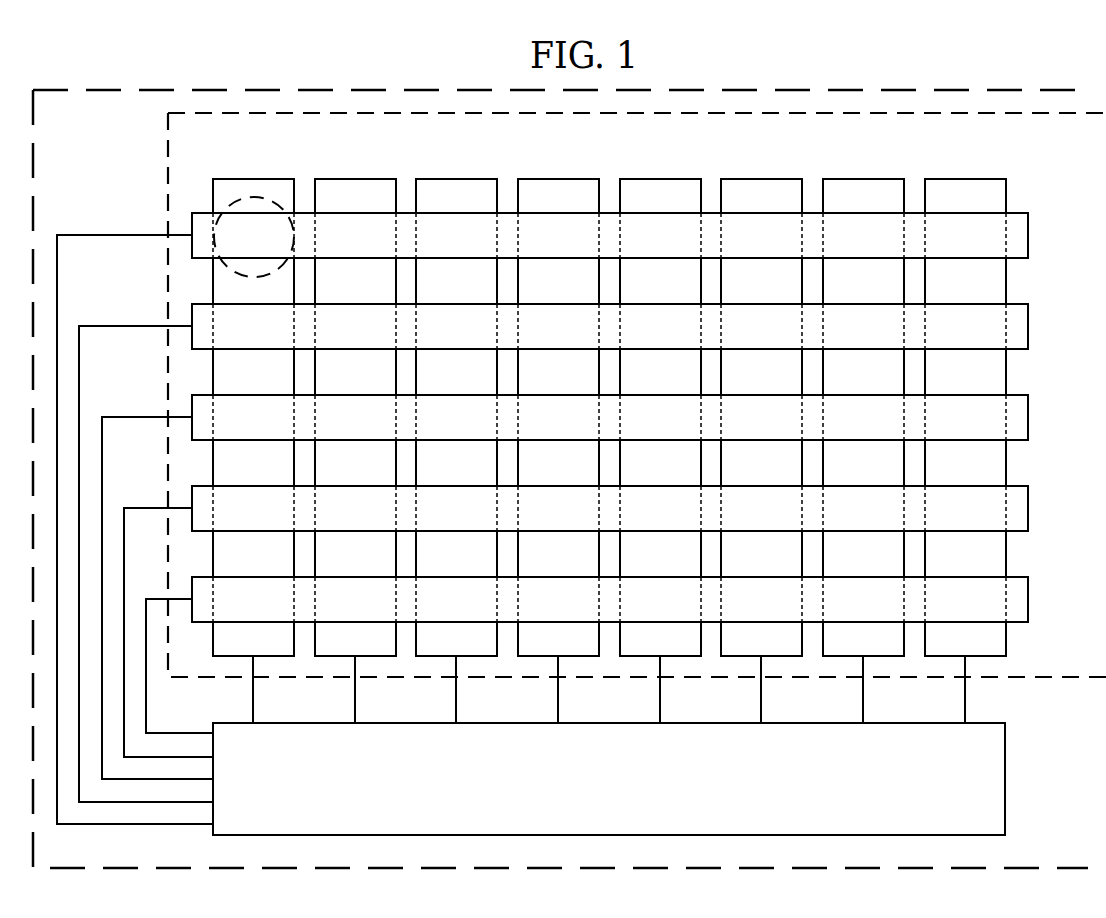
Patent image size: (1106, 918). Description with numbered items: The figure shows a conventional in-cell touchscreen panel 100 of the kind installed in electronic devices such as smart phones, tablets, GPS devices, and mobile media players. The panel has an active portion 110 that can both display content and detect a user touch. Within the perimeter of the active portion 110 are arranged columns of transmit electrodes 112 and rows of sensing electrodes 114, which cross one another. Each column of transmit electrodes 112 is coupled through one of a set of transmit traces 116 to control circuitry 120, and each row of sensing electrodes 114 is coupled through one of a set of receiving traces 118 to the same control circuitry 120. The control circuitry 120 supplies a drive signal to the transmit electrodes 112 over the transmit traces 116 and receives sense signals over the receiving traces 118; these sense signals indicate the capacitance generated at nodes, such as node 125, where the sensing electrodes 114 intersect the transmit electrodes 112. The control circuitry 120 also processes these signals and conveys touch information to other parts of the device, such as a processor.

The in-cell touchscreen panel 100 is at (802, 90).
The active portion 110 is at (682, 163).
The transmit electrodes 112 is at (966, 190).
The sensing electrodes 114 is at (1018, 325).
The transmit traces 116 is at (967, 688).
The receiving traces 118 is at (113, 235).
The control circuitry 120 is at (631, 794).
The node 125 is at (259, 197).